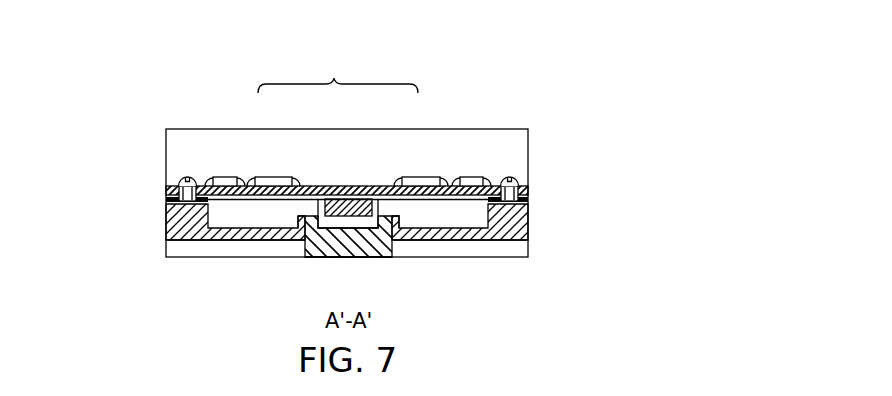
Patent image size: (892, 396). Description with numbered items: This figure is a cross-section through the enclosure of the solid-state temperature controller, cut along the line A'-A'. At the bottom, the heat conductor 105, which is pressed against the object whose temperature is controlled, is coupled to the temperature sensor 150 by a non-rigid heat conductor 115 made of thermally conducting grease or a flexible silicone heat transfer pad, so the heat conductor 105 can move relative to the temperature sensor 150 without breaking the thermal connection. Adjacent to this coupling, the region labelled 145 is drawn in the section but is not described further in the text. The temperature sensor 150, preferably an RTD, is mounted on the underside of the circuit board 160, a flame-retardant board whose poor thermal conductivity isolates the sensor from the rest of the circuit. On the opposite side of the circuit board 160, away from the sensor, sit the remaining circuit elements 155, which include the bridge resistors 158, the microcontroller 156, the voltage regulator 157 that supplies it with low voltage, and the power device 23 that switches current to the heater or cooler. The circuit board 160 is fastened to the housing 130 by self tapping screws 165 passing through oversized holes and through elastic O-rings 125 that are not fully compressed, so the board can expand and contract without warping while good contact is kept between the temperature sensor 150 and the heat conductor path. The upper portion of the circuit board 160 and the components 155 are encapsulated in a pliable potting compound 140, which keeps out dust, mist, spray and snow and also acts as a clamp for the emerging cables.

The potting compound 140 is at (187, 150).
The remaining circuit elements 155 is at (338, 73).
The resistors 158 is at (232, 176).
The microcontroller 156 is at (272, 176).
The voltage regulator 157 is at (418, 176).
The power device 23 is at (470, 176).
The self tapping screw 165 is at (179, 181).
The circuit board 160 is at (527, 191).
The O-rings 125 is at (166, 200).
The housing 130 is at (539, 223).
The pedestal rim 145 is at (300, 215).
The temperature sensor 150 is at (380, 204).
The non-rigid heat conductor 115 is at (353, 222).
The heat conductor 105 is at (334, 261).